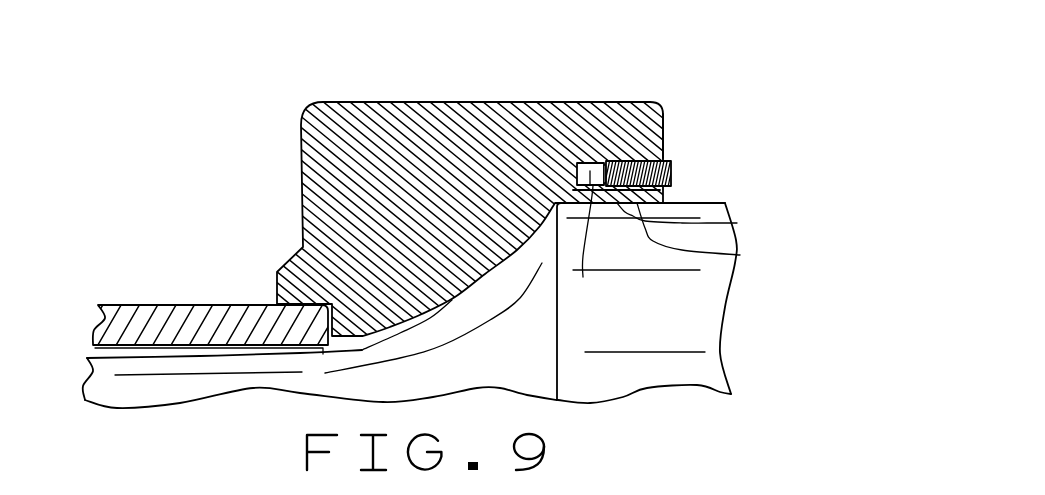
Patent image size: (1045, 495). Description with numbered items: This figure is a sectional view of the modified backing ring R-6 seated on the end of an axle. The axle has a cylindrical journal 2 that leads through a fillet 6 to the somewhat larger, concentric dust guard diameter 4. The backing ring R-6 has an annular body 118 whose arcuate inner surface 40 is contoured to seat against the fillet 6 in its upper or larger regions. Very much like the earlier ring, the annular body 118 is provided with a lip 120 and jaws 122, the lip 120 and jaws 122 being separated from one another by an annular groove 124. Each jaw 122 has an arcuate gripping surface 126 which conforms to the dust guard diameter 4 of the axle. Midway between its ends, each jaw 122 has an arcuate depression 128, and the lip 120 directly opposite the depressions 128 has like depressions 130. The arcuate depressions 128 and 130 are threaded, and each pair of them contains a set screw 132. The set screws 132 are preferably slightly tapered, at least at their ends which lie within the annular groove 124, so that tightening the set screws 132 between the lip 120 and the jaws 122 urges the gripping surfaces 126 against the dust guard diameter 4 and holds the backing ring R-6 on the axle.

The annular body 118 is at (388, 128).
The lip 120 is at (583, 122).
The depressions 130 is at (663, 128).
The set screw 132 is at (672, 168).
The jaws 122 is at (672, 188).
The arcuate depression 128 is at (737, 223).
The arcuate gripping surface 126 is at (740, 255).
The annular groove 124 is at (583, 277).
The dust guard diameter 4 is at (700, 317).
The arcuate inner surface 40 is at (503, 268).
The fillet 6 is at (528, 375).
The journal 2 is at (143, 393).
The backing ring R-6 is at (672, 78).